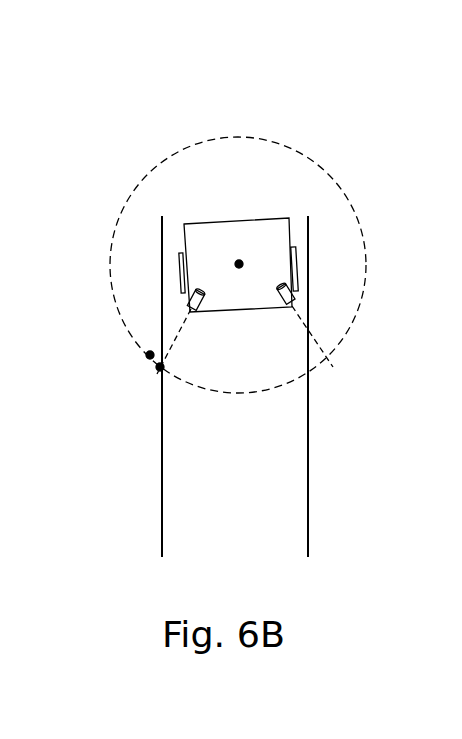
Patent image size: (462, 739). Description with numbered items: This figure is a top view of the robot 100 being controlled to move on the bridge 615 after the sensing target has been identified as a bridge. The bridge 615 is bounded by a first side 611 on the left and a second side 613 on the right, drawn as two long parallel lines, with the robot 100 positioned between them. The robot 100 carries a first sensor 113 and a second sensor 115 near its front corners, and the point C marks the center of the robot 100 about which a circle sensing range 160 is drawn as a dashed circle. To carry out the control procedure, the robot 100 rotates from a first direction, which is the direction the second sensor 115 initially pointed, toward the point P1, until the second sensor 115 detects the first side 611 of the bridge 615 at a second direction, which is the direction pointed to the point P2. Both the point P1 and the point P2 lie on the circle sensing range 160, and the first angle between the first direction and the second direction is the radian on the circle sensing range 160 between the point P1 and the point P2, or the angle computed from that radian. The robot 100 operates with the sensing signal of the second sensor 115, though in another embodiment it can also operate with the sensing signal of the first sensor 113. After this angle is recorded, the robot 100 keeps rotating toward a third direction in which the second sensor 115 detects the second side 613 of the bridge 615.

The robot 100 is at (282, 193).
The first sensor 113 is at (297, 293).
The second sensor 115 is at (188, 302).
The circle sensing range 160 is at (367, 258).
The first side 611 is at (162, 460).
The second side 613 is at (308, 460).
The bridge 615 is at (250, 502).
The vehicle center point C is at (239, 262).
The point P1 is at (150, 355).
The point P2 is at (159, 369).